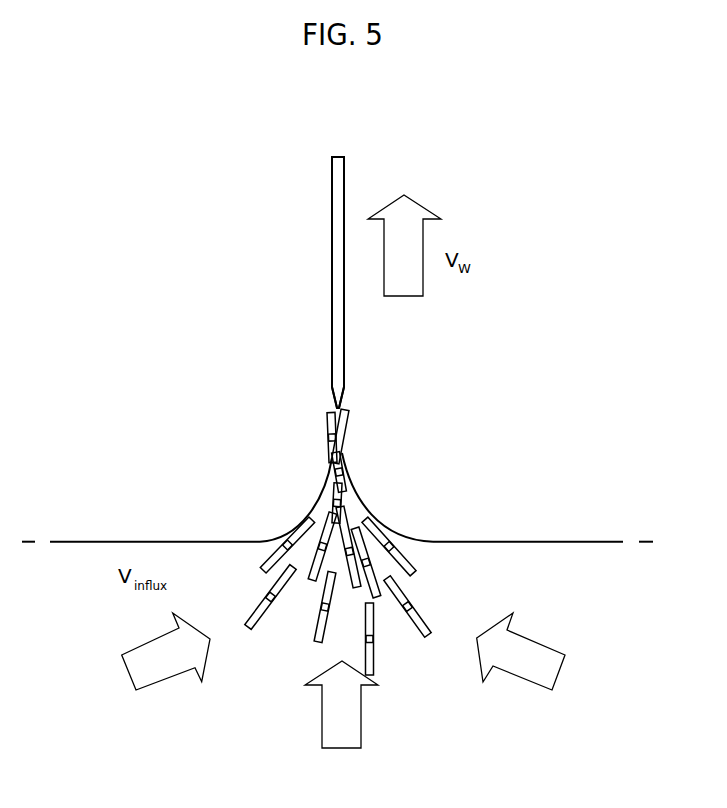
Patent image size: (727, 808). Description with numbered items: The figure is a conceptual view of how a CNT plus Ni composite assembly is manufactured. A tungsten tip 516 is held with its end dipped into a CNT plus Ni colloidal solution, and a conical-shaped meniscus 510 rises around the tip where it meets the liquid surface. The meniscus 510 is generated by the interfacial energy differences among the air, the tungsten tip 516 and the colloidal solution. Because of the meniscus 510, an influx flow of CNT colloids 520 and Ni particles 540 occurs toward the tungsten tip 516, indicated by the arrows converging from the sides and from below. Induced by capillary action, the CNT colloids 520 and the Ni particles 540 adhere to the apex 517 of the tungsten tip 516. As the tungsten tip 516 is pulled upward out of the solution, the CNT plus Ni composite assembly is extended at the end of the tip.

The tungsten tip 516 is at (337, 243).
The apex 517 is at (333, 405).
The meniscus 510 is at (363, 542).
The CNT colloids 520 is at (368, 555).
The Ni particles 540 is at (402, 552).